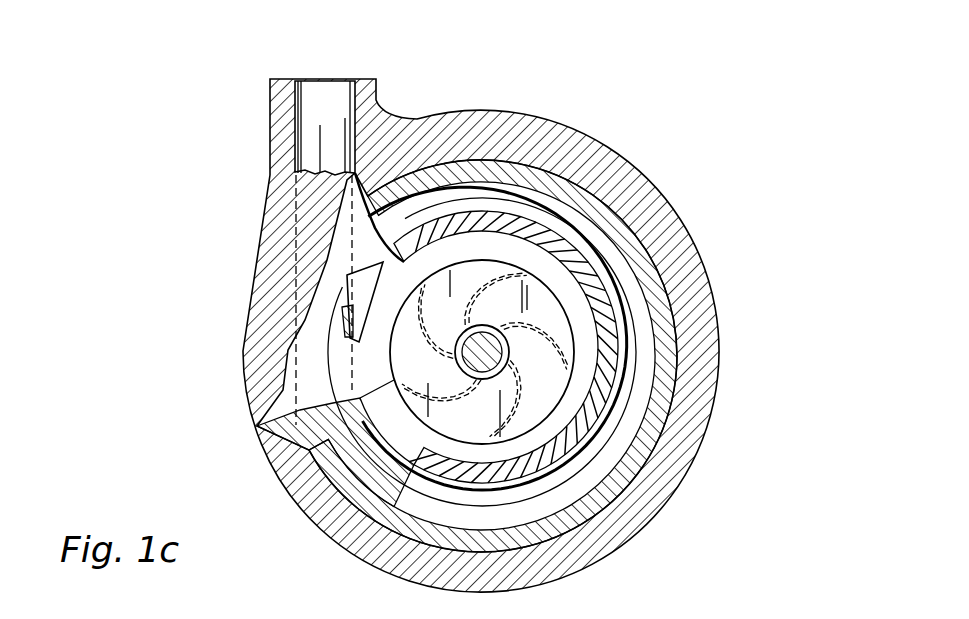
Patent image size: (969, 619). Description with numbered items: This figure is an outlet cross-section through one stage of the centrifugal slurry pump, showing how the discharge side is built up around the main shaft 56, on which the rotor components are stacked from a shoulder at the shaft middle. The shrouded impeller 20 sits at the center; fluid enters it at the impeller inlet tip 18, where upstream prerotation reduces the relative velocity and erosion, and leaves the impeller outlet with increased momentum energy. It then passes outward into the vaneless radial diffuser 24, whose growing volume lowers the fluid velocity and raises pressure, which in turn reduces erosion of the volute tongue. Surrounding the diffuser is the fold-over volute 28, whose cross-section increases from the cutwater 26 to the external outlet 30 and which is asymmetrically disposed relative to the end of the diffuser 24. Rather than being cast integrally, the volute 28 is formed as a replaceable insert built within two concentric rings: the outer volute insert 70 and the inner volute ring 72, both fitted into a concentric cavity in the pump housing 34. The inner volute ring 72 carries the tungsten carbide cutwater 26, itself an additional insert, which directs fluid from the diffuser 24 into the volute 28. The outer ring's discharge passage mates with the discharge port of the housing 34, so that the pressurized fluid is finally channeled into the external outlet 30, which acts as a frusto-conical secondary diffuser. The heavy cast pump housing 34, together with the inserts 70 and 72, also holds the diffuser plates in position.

The external outlet 30 is at (325, 92).
The pump housing 34 is at (615, 163).
The impeller 20 is at (418, 296).
The cutwater 26 is at (327, 316).
The volute insert 70 is at (300, 357).
The inner volute ring 72 is at (287, 412).
The impeller inlet tip 18 is at (400, 354).
The vaneless radial diffuser 24 is at (495, 442).
The main shaft 56 is at (492, 373).
The fold-over volute 28 is at (537, 512).